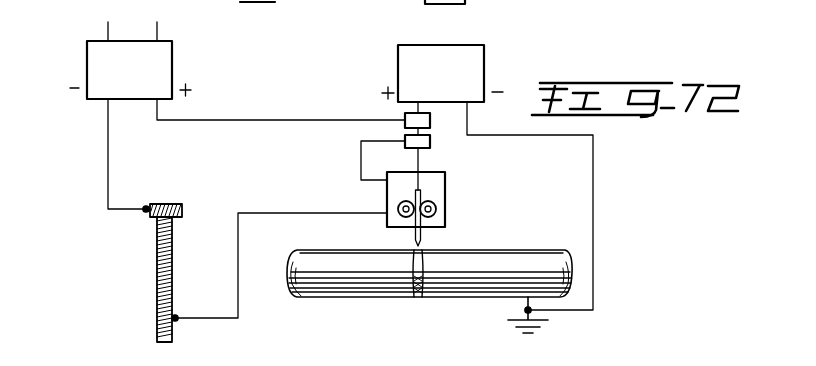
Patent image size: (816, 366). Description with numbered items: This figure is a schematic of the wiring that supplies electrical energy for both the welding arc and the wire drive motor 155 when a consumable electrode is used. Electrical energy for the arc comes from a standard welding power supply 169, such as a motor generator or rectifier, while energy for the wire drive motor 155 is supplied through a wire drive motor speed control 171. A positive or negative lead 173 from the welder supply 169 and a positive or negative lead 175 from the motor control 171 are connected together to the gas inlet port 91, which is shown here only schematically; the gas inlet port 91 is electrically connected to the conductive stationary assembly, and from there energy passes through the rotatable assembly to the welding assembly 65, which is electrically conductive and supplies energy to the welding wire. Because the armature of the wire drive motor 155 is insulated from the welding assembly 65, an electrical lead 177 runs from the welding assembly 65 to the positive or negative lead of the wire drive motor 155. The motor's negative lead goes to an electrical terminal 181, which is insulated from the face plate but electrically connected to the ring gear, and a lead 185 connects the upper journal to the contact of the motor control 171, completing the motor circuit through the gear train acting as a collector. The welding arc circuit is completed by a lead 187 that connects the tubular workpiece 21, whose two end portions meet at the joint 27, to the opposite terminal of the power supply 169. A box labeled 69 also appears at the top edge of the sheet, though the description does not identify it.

The tubular workpiece 21 is at (395, 310).
The joint 27 is at (416, 299).
The welding assembly 65 is at (431, 148).
The box 69 is at (307, 7).
The gas inlet port 91 is at (431, 121).
The wire drive motor 155 is at (447, 214).
The welding power supply 169 is at (485, 62).
The wire drive motor speed control 171 is at (172, 68).
The lead 173 is at (412, 105).
The lead 175 is at (255, 120).
The electrical lead 177 is at (361, 160).
The electrical terminal 181 is at (257, 212).
The lead 185 is at (107, 160).
The lead 187 is at (594, 206).